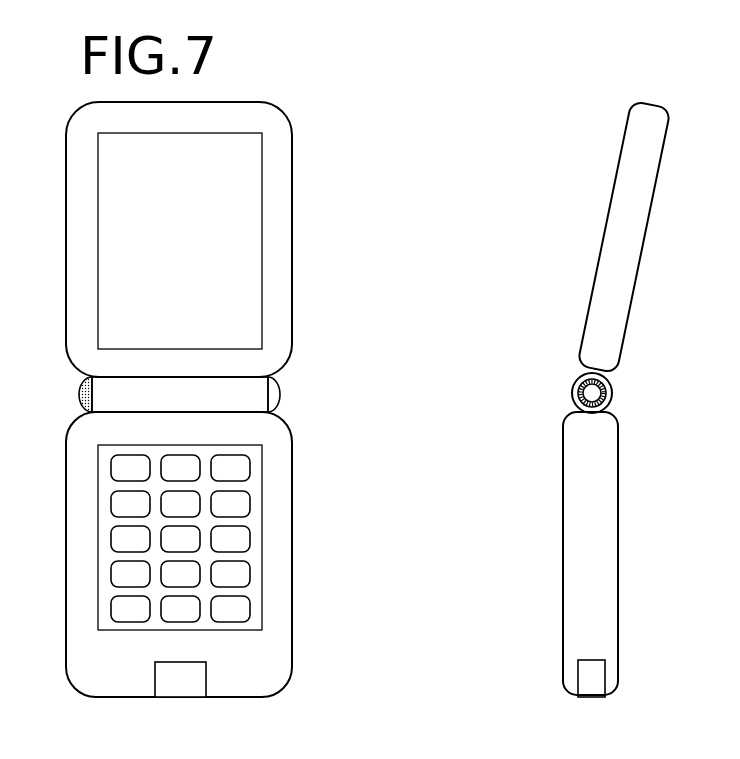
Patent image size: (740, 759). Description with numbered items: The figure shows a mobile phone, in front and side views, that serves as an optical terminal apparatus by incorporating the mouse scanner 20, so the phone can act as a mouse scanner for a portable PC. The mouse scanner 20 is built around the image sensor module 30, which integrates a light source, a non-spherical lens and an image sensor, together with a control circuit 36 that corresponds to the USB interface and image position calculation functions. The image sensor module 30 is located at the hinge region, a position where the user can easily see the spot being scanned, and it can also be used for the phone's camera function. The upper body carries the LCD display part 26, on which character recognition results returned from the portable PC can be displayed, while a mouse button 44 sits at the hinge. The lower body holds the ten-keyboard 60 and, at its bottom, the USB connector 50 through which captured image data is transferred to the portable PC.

The LCD display part 26 is at (180, 241).
The image sensor module 30 is at (319, 412).
The control circuit 36 is at (204, 403).
The mouse button 44 is at (293, 374).
The mouse scanner 20 is at (40, 412).
The ten-keyboard 60 is at (261, 550).
The USB connector 50 is at (564, 679).